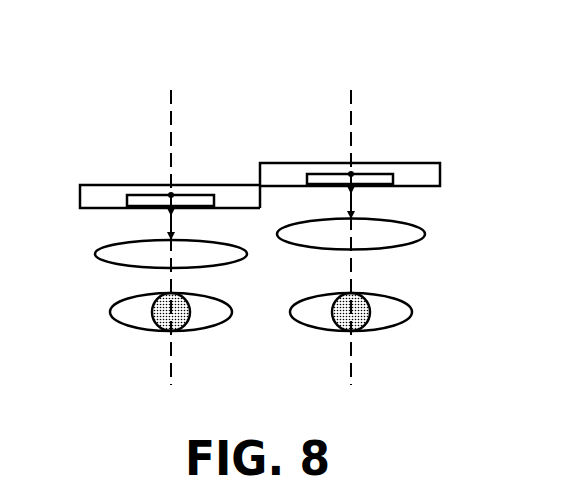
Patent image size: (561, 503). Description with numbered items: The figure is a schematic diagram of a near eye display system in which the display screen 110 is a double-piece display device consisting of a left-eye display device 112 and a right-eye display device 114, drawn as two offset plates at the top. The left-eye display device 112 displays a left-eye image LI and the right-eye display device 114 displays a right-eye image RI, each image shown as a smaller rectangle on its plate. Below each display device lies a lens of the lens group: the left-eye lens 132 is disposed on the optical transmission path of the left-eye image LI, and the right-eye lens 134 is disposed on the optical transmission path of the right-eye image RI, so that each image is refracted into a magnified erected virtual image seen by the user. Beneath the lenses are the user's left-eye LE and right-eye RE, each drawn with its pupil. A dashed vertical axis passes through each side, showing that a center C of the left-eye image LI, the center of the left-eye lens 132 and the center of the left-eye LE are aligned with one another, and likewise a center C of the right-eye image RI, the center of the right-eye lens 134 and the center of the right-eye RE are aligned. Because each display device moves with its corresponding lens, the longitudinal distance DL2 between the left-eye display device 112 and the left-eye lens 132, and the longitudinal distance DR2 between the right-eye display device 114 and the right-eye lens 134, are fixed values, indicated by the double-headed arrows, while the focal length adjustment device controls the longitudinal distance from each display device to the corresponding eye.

The display screen 110 is at (260, 118).
The left-eye display device 112 is at (240, 190).
The right-eye display device 114 is at (282, 170).
The left-eye lens 132 is at (105, 254).
The right-eye lens 134 is at (415, 232).
The left-eye image LI is at (137, 198).
The right-eye image RI is at (383, 177).
The center C is at (172, 195).
The longitudinal distance DL2 is at (194, 224).
The longitudinal distance DR2 is at (376, 204).
The left-eye LE is at (126, 311).
The right-eye RE is at (395, 313).